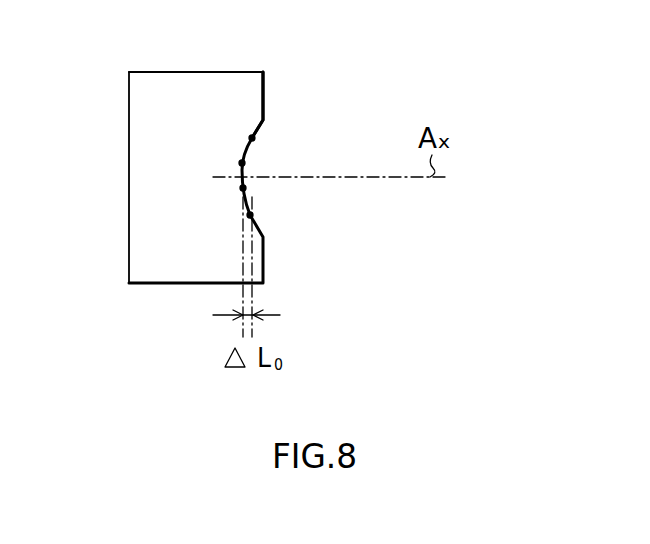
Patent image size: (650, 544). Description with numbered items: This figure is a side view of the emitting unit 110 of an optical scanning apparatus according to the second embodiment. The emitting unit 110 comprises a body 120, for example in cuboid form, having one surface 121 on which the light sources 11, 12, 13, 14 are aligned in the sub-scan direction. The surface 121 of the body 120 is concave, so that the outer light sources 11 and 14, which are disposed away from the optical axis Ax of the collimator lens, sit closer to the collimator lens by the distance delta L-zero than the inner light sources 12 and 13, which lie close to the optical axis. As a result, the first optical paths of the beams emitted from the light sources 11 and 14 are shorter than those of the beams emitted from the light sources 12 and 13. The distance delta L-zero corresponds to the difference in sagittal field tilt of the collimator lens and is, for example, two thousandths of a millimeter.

The body 120 is at (113, 100).
The emitting unit 110 is at (165, 72).
The surface 121 is at (258, 125).
The light source 14 is at (254, 136).
The light source 13 is at (246, 162).
The light source 12 is at (246, 189).
The light source 11 is at (253, 215).